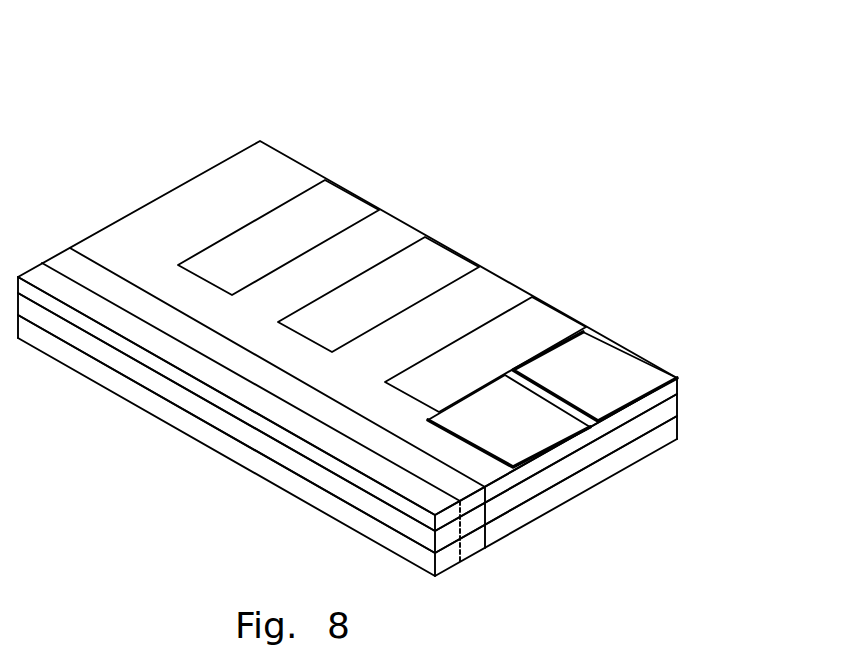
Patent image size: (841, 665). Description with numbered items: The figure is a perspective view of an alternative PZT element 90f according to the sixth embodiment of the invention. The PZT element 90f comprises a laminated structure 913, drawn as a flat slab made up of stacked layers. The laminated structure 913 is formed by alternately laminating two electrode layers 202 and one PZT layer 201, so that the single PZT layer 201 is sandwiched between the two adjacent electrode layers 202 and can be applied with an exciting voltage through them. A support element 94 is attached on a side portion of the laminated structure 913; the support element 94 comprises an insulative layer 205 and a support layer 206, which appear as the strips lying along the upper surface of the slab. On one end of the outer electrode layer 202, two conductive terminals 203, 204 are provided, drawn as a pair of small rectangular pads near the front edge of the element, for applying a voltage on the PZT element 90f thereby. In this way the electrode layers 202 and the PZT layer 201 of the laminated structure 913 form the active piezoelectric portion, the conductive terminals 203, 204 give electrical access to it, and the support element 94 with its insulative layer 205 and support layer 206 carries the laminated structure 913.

The PZT element 90f is at (397, 30).
The laminated structure 913 is at (655, 567).
The PZT layer 201 is at (657, 422).
The electrode layer 202 is at (623, 467).
The support element 94 is at (688, 43).
The insulative layer 205 is at (303, 398).
The support layer 206 is at (180, 358).
The conductive terminal 203 is at (578, 380).
The conductive terminal 204 is at (478, 418).